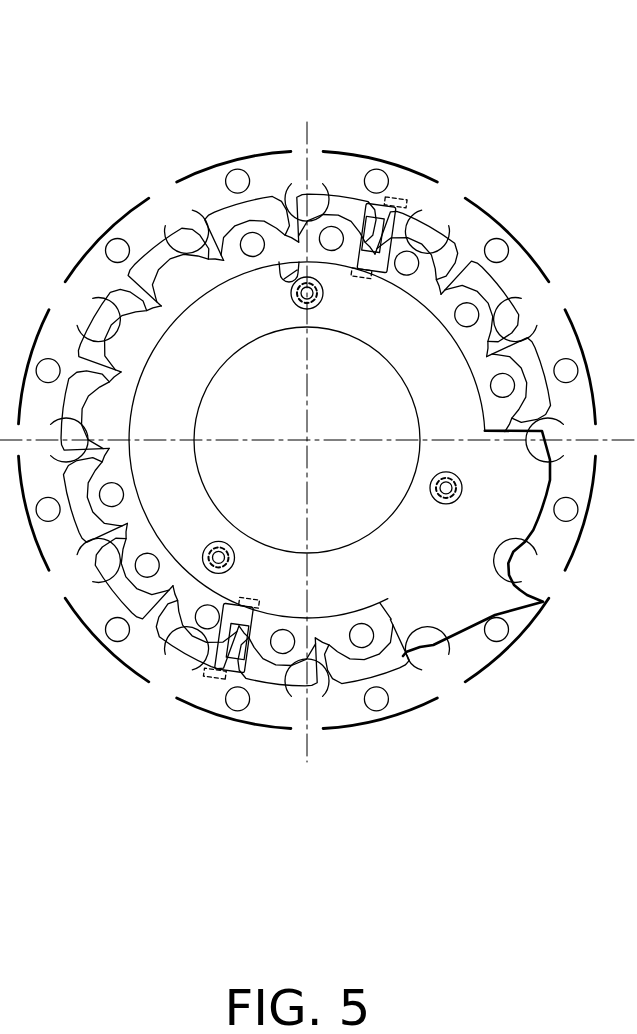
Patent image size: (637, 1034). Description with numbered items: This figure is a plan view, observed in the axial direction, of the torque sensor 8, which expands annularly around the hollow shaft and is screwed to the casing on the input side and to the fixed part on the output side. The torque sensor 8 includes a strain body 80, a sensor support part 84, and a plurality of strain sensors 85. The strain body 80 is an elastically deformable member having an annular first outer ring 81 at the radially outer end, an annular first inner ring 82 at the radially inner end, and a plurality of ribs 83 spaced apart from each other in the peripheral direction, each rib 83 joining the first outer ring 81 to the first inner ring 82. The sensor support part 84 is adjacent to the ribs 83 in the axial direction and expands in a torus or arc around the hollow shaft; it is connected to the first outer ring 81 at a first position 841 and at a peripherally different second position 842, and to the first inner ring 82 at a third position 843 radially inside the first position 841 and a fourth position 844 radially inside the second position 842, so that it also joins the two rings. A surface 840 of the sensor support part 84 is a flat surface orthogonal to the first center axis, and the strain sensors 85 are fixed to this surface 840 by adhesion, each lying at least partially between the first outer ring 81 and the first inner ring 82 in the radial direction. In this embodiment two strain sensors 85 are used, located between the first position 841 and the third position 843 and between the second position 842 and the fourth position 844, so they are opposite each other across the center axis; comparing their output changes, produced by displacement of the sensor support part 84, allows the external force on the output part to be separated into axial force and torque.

The torque sensor 8 is at (236, 80).
The strain body 80 is at (500, 668).
The first outer ring 81 is at (418, 690).
The first inner ring 82 is at (233, 230).
The ribs 83 is at (453, 255).
The sensor support part 84 is at (307, 440).
The surface 840 is at (198, 335).
The first position 841 is at (384, 196).
The second position 842 is at (226, 688).
The third position 843 is at (376, 232).
The fourth position 844 is at (236, 646).
The strain sensors 85 is at (391, 203).